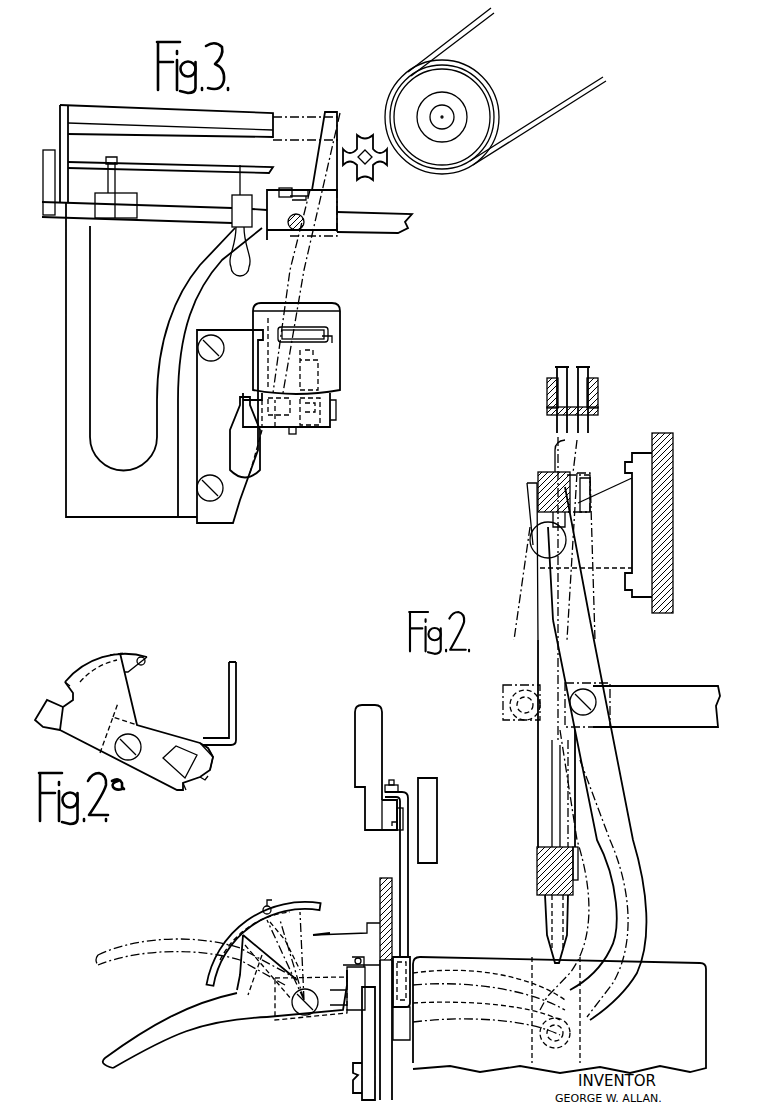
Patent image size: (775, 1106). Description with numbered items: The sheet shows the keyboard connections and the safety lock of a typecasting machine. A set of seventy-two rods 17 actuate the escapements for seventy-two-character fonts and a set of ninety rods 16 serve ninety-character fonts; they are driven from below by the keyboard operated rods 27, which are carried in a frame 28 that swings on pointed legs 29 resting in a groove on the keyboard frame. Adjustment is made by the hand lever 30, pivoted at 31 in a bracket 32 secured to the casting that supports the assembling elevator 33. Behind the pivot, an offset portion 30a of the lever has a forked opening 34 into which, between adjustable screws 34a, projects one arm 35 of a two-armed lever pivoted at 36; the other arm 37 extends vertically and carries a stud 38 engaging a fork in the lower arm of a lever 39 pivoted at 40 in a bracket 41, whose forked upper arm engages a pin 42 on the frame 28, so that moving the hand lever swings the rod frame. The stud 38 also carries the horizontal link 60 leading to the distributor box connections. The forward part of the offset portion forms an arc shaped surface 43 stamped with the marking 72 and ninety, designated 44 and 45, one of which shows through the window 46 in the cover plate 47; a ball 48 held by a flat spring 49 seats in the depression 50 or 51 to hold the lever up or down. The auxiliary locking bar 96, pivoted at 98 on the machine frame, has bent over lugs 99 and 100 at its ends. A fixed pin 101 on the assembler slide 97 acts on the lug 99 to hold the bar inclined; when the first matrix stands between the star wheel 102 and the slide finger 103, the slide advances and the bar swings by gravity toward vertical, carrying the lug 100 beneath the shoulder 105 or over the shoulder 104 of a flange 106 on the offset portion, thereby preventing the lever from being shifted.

In FIG. 2, the rods 16 is at (590, 372).
In FIG. 2, the rods 17 is at (556, 372).
In FIG. 2, the keyboard operated rods 27 is at (556, 465).
In FIG. 2, the frame 28 is at (537, 824).
In FIG. 2, the pointed legs 29 is at (546, 948).
In FIG. 3, the hand lever 30 is at (258, 466).
In FIG. 2A, the hand lever 30 is at (48, 723).
In FIG. 2, the hand lever 30 is at (162, 1020).
In FIG. 3, the offset portion 30a is at (326, 424).
In FIG. 2A, the offset portion 30a is at (134, 713).
In FIG. 2, the offset portion 30a is at (258, 1023).
In FIG. 2, the pivot 31 is at (300, 1012).
In FIG. 3, the bracket 32 is at (237, 498).
In FIG. 2, the bracket 32 is at (362, 1052).
In FIG. 3, the assembling elevator 33 is at (132, 518).
In FIG. 2A, the forked opening 34 is at (173, 788).
In FIG. 2, the forked opening 34 is at (348, 978).
In FIG. 2, the adjustable screws 34a is at (350, 930).
In FIG. 2, the arm 35 is at (425, 973).
In FIG. 2, the pivot 36 is at (553, 1045).
In FIG. 2, the arm 37 is at (628, 832).
In FIG. 2, the stud 38 is at (590, 690).
In FIG. 2, the lever 39 is at (580, 632).
In FIG. 2, the pivot 40 is at (540, 545).
In FIG. 2, the bracket 41 is at (604, 560).
In FIG. 2, the pin 42 is at (538, 497).
In FIG. 3, the arc shaped surface 43 is at (334, 326).
In FIG. 2A, the arc shaped surface 43 is at (97, 657).
In FIG. 2A, the marking 44 is at (118, 654).
In FIG. 2A, the marking 45 is at (66, 680).
In FIG. 3, the window 46 is at (326, 344).
In FIG. 2, the window 46 is at (253, 927).
In FIG. 3, the cover plate 47 is at (336, 371).
In FIG. 2, the cover plate 47 is at (295, 908).
In FIG. 2, the ball 48 is at (264, 906).
In FIG. 3, the flat spring 49 is at (318, 304).
In FIG. 2A, the depression 50 is at (146, 666).
In FIG. 2A, the depression 51 is at (88, 663).
In FIG. 2, the horizontal link 60 is at (684, 727).
In FIG. 3, the marking 72 is at (303, 334).
In FIG. 3, the auxiliary locking bar 96 is at (284, 273).
In FIG. 2A, the auxiliary locking bar 96 is at (234, 690).
In FIG. 2, the auxiliary locking bar 96 is at (411, 893).
In FIG. 3, the assembler slide 97 is at (345, 231).
In FIG. 2, the assembler slide 97 is at (384, 812).
In FIG. 2, the pivot 98 is at (398, 826).
In FIG. 3, the lug 99 is at (308, 168).
In FIG. 2, the lug 99 is at (402, 790).
In FIG. 3, the lug 100 is at (274, 430).
In FIG. 2A, the lug 100 is at (212, 745).
In FIG. 2, the lug 100 is at (410, 1040).
In FIG. 3, the fixed pin 101 is at (285, 188).
In FIG. 2, the fixed pin 101 is at (392, 780).
In FIG. 3, the star wheel 102 is at (368, 176).
In FIG. 3, the assembler slide finger 103 is at (333, 112).
In FIG. 2, the assembler slide finger 103 is at (362, 757).
In FIG. 2A, the shoulder 104 is at (212, 762).
In FIG. 2A, the shoulder 105 is at (204, 780).
In FIG. 3, the flange 106 is at (293, 434).
In FIG. 2A, the flange 106 is at (190, 790).